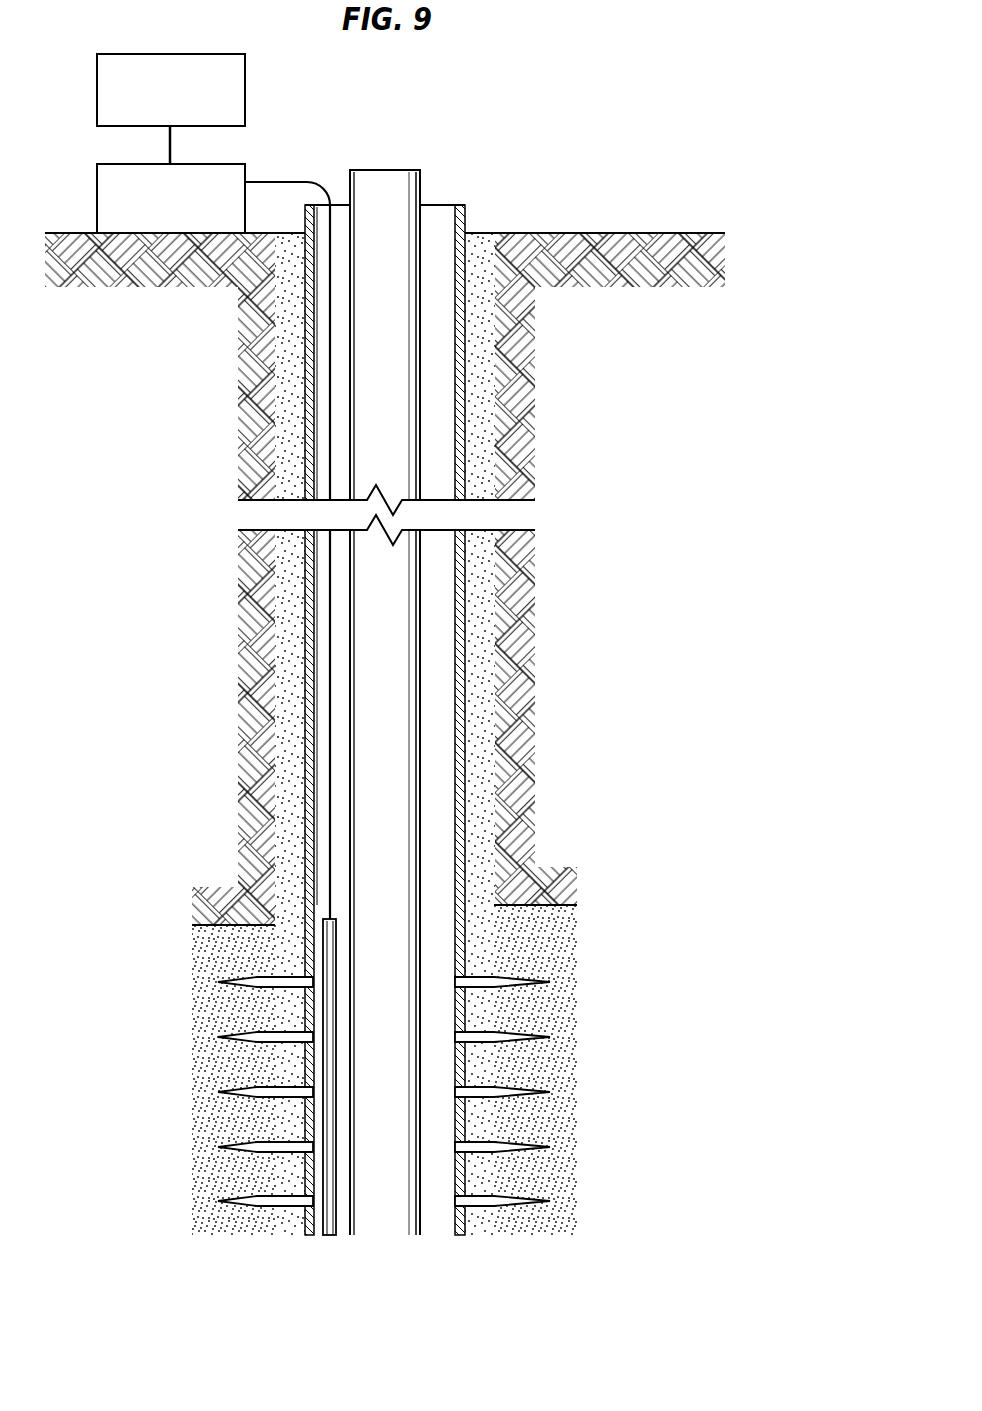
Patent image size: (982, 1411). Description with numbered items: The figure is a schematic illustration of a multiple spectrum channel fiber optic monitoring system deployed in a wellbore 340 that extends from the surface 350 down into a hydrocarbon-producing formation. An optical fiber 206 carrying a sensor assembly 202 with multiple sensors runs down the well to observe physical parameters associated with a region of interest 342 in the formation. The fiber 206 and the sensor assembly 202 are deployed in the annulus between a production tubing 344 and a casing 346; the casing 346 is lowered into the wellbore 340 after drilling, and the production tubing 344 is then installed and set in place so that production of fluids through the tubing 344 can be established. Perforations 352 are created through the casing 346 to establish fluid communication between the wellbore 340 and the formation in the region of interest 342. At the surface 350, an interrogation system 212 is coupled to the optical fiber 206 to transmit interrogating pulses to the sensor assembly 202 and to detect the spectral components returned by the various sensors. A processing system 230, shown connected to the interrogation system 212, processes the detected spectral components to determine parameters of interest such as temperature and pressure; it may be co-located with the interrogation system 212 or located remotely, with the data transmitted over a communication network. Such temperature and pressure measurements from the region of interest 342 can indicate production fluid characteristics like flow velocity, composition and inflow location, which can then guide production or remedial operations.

The processing system 230 is at (95, 93).
The interrogation system 212 is at (95, 203).
The optical fiber 206 is at (272, 182).
The surface 350 is at (657, 233).
The production tubing 344 is at (365, 397).
The wellbore 340 is at (490, 369).
The casing 346 is at (467, 430).
The region of interest 342 is at (558, 955).
The sensor assembly 202 is at (323, 947).
The perforations 352 is at (267, 1035).